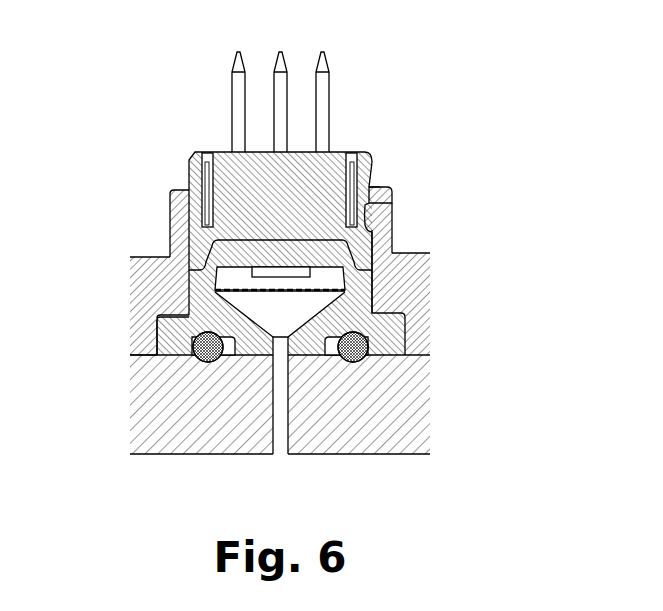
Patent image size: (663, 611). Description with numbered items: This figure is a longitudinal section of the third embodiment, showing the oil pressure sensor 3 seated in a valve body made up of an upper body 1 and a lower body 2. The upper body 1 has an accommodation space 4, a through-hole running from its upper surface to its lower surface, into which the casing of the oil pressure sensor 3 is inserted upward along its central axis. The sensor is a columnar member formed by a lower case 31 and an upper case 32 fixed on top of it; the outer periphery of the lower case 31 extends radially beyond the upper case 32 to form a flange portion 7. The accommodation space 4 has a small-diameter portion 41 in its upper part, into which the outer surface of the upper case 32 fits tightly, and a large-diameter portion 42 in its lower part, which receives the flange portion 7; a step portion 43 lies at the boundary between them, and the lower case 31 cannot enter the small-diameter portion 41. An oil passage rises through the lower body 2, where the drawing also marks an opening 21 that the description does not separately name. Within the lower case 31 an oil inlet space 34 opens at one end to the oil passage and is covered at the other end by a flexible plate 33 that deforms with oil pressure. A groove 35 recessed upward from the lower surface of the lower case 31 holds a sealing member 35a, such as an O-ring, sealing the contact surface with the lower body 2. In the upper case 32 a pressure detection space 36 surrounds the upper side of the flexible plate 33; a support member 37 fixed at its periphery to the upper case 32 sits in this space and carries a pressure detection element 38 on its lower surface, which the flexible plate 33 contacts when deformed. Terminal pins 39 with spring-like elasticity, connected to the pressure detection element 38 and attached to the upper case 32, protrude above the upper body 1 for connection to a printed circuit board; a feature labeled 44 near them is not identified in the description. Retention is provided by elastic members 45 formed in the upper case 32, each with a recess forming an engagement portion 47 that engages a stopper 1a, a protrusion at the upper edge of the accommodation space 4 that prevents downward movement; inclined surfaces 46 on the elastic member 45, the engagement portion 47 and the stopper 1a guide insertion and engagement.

The upper body 1 is at (138, 265).
The stopper 1a is at (386, 186).
The lower body 2 is at (148, 431).
The pressure introduction hole 21 is at (278, 443).
The oil pressure sensor 3 is at (230, 163).
The lower case 31 is at (362, 307).
The upper case 32 is at (247, 180).
The flexible plate 33 is at (253, 293).
The oil inlet space 34 is at (323, 303).
The groove 35 is at (333, 342).
The sealing member 35a is at (203, 355).
The pressure detection space 36 is at (322, 286).
The support member 37 is at (233, 254).
The pressure detection element 38 is at (270, 268).
The terminal pins 39 is at (331, 77).
The accommodation space 4 is at (373, 262).
The small-diameter portion 41 is at (184, 214).
The large-diameter portion 42 is at (155, 350).
The step portion 43 is at (170, 312).
The terminal slot 44 is at (352, 157).
The elastic member 45 is at (372, 178).
The inclined surface 46 is at (371, 160).
The engagement portion 47 is at (373, 187).
The flange portion 7 is at (160, 334).